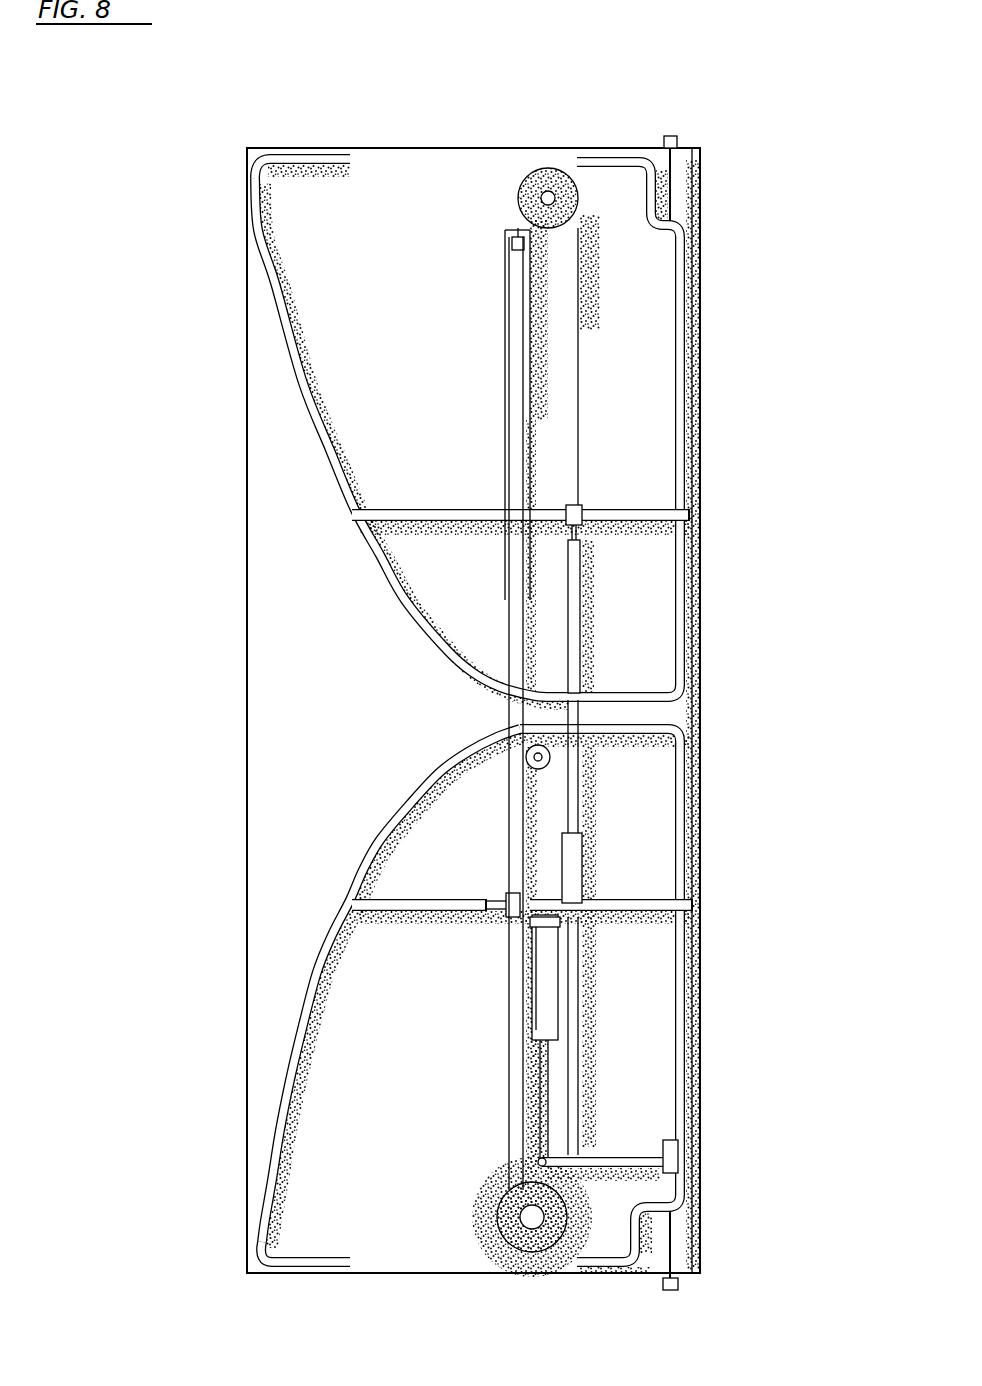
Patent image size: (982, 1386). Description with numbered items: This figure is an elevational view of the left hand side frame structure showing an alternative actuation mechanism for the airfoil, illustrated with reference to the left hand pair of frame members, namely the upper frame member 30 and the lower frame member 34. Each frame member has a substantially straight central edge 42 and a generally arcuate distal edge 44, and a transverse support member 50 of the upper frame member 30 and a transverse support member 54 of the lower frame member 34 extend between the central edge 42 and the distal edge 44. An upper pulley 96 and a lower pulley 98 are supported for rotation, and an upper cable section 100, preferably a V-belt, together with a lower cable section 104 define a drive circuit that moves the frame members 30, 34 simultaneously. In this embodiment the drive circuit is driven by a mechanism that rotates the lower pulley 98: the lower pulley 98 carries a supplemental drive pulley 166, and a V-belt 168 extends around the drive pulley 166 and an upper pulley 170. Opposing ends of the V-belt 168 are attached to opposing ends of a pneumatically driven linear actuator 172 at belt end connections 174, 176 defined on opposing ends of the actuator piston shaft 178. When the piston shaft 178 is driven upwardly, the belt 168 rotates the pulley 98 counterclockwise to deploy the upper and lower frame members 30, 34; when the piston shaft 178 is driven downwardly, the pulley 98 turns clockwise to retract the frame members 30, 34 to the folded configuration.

The first upper frame member 30 is at (298, 422).
The first lower frame member 34 is at (340, 898).
The central edge 42 is at (693, 420).
The distal edge 44 is at (400, 603).
The transverse support member 50 is at (433, 507).
The transverse support member 54 is at (443, 899).
The upper pulley 96 is at (543, 190).
The lower pulley 98 is at (524, 1246).
The upper cable section 100 is at (497, 1104).
The lower cable section 104 is at (581, 420).
The drive pulley 166 is at (522, 1226).
The V-belt 168 is at (512, 970).
The upper pulley 170 is at (551, 760).
The pneumatically driven linear actuator 172 is at (556, 992).
The belt end connection 174 is at (556, 920).
The belt end connection 176 is at (560, 1150).
The actuator piston shaft 178 is at (548, 1092).